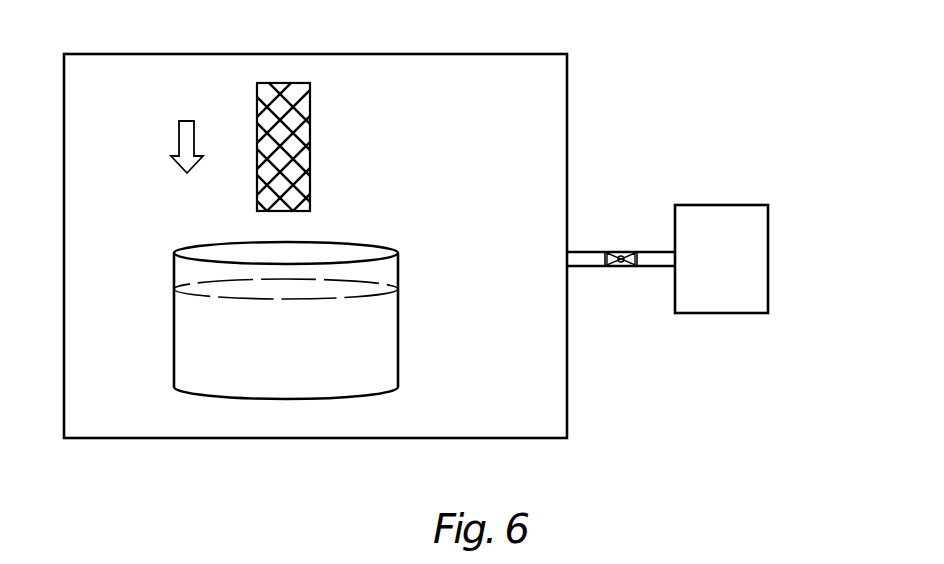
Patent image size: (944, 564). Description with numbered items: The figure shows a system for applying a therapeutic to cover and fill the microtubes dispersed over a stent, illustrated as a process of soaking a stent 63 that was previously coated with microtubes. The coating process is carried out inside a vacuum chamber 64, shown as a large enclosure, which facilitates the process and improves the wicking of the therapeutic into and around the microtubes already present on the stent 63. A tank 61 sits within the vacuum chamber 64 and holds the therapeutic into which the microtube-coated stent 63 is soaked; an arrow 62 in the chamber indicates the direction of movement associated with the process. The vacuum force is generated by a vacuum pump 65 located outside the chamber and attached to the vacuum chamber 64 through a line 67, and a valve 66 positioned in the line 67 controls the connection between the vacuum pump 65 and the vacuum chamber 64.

The tank 61 is at (398, 321).
The gas flow arrow 62 is at (179, 145).
The stent 63 is at (310, 117).
The vacuum chamber 64 is at (567, 101).
The vacuum pump 65 is at (769, 260).
The valve 66 is at (612, 267).
The line 67 is at (586, 252).